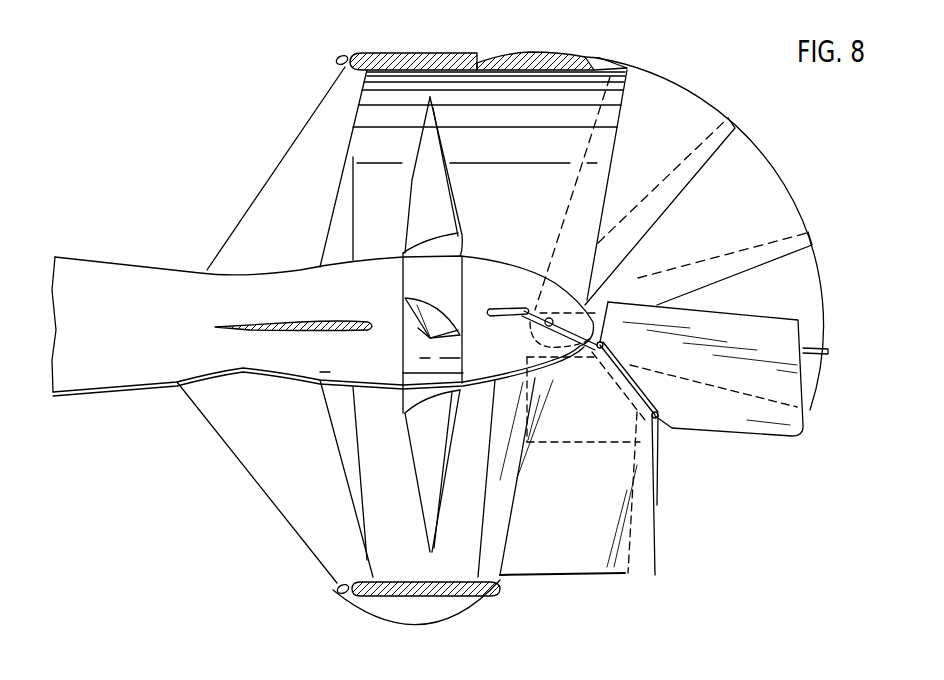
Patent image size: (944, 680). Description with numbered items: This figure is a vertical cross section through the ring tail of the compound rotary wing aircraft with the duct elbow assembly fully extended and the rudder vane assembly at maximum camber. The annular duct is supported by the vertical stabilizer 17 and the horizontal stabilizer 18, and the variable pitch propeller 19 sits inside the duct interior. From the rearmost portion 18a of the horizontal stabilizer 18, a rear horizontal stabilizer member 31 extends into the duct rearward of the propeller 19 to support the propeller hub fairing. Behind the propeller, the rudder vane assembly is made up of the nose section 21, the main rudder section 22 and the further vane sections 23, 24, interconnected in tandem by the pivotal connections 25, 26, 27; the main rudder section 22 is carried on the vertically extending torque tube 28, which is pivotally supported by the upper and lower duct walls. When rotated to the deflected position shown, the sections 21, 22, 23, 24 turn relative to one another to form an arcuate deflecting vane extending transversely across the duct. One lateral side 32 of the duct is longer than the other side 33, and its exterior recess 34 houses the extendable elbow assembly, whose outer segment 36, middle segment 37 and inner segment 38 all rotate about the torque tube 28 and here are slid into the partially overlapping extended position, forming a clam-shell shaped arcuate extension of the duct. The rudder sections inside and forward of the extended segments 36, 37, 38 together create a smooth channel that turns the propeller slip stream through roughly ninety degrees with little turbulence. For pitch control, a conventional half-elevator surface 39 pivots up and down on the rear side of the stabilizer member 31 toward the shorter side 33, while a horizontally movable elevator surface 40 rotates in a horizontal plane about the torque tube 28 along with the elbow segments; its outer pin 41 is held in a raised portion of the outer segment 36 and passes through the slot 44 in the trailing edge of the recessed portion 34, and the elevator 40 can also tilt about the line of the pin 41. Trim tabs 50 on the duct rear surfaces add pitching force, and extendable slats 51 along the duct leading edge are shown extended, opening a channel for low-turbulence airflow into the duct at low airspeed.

The vertical stabilizer 17 is at (298, 318).
The horizontal stabilizer 18 is at (267, 200).
The rearmost portion of the horizontal stabilizer 18a is at (460, 610).
The variable pitch propeller 19 is at (448, 290).
The nose rudder vane section 21 is at (493, 307).
The main rudder vane section 22 is at (532, 330).
The rudder vane section 23 is at (633, 392).
The rudder vane section 24 is at (658, 504).
The pivotal connection 25 is at (527, 307).
The pivotal connection 26 is at (605, 347).
The pivotal connection 27 is at (659, 416).
The torque tube 28 is at (565, 310).
The rear horizontal stabilizer member 31 is at (497, 525).
The longer lateral side of the duct 32 is at (453, 39).
The shorter lateral side of the duct 33 is at (408, 598).
The recess 34 is at (478, 62).
The outer elbow segment 36 is at (812, 285).
The middle elbow segment 37 is at (763, 165).
The inner elbow segment 38 is at (695, 110).
The half-elevator surface 39 is at (587, 532).
The horizontally movable elevator surface 40 is at (764, 383).
The pin 41 is at (828, 352).
The slot 44 is at (587, 61).
The trim tabs 50 is at (601, 442).
The extendable slats 51 is at (320, 597).